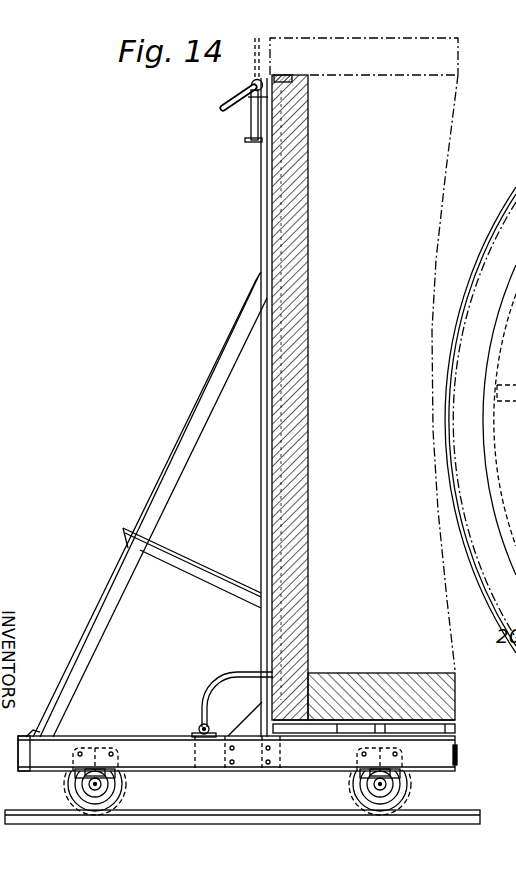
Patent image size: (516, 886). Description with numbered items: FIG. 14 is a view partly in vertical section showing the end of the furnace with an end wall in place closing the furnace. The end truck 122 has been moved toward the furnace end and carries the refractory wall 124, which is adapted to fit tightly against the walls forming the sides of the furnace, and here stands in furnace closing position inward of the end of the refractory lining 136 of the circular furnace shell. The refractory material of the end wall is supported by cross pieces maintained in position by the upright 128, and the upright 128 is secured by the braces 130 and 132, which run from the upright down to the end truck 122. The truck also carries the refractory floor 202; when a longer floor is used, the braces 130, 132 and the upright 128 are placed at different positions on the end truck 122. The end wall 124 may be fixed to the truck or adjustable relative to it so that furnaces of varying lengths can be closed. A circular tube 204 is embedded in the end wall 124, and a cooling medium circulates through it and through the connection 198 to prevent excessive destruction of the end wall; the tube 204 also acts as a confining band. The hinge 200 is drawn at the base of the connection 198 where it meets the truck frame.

The end truck 122 is at (138, 738).
The refractory wall 124 is at (295, 165).
The upright 128 is at (268, 432).
The brace 130 is at (207, 413).
The brace 132 is at (197, 572).
The refractory lining 136 is at (446, 55).
The connection 198 is at (233, 681).
The hinge 200 is at (209, 727).
The floor 202 is at (375, 673).
The circular tube 204 is at (287, 78).